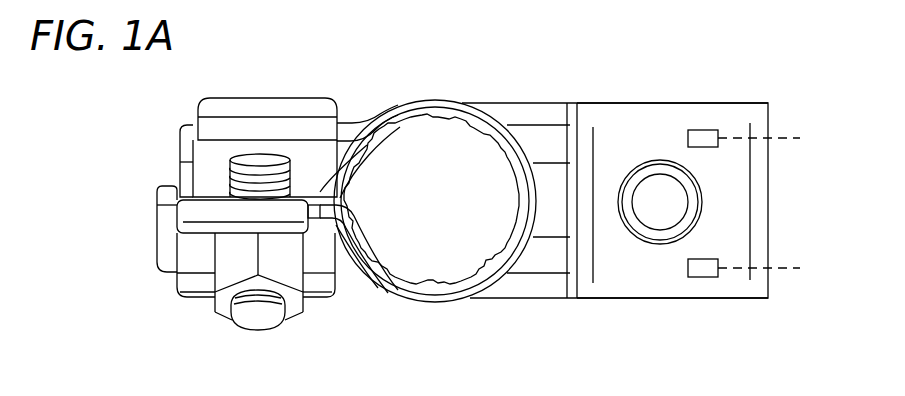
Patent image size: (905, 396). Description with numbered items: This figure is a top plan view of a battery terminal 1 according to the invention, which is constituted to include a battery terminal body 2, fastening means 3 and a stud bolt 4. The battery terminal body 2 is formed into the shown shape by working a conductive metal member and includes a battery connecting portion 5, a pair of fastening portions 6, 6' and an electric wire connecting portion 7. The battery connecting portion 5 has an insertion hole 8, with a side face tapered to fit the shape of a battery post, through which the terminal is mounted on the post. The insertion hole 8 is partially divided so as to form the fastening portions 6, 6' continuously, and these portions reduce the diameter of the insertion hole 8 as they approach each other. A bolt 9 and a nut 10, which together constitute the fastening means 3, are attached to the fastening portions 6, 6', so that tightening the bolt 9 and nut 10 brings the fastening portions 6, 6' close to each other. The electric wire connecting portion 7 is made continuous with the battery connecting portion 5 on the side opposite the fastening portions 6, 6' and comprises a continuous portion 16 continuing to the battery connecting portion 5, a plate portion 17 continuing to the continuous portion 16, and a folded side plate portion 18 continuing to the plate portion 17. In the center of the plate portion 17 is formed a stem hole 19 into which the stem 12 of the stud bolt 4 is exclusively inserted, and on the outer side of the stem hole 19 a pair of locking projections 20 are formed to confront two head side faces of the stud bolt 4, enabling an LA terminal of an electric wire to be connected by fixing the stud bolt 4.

The battery terminal 1 is at (480, 65).
The battery terminal body 2 is at (416, 90).
The fastening means 3 is at (214, 323).
The stud bolt 4 is at (656, 186).
The battery connecting portion 5 is at (413, 306).
The fastening portion 6 is at (258, 120).
The fastening portion 6' is at (153, 256).
The electric wire connecting portion 7 is at (668, 103).
The insertion hole 8 is at (355, 237).
The bolt 9 is at (257, 322).
The nut 10 is at (288, 266).
The stem 12 is at (680, 207).
The continuous portion 16 is at (541, 260).
The plate portion 17 is at (634, 275).
The folded side plate portion 18 is at (665, 278).
The stem hole 19 is at (684, 184).
The locking projections 20 is at (763, 197).